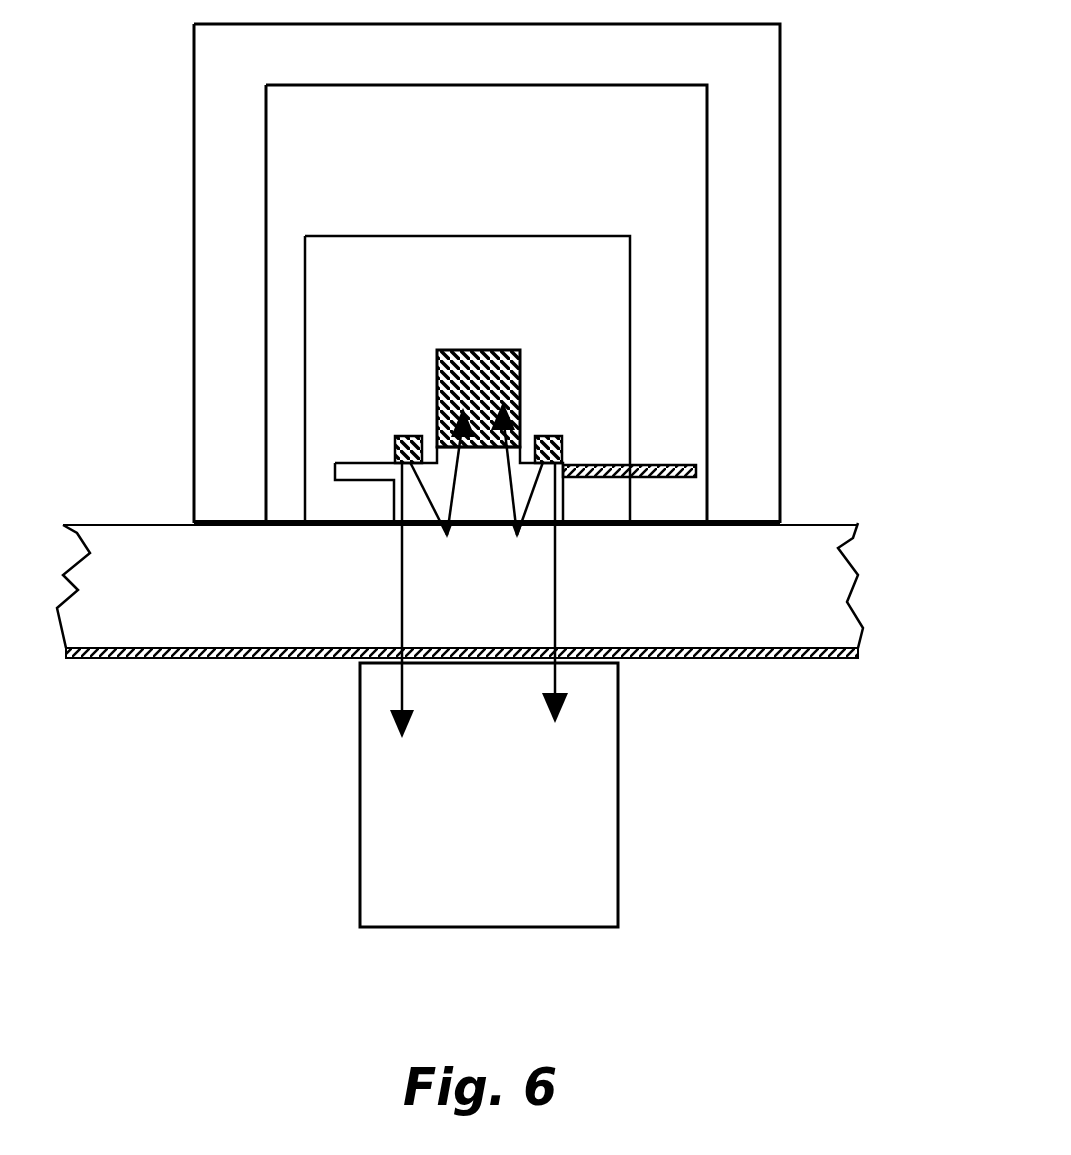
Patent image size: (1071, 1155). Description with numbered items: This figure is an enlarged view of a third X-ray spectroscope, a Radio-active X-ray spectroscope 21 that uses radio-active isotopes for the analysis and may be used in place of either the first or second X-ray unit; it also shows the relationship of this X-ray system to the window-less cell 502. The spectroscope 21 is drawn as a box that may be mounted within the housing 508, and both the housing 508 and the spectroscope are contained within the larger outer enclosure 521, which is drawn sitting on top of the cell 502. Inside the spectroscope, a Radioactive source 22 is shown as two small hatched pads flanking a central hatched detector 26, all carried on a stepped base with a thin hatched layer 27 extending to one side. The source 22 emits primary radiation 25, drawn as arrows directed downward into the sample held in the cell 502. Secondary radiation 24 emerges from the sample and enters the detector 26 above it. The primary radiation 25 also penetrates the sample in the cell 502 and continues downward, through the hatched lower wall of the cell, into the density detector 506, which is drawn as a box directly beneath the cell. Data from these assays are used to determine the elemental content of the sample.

The Radio-active X-ray spectroscope 21 is at (459, 268).
The Radioactive source 22 is at (395, 434).
The secondary radiation 24 is at (450, 475).
The primary radiation 25 is at (403, 695).
The detector 26 is at (433, 348).
The insulating layer 27 is at (673, 462).
The cell 502 is at (278, 662).
The density detector 506 is at (539, 785).
The mounting housing for X-ray system 508 is at (360, 170).
The outer enclosure 521 is at (741, 144).